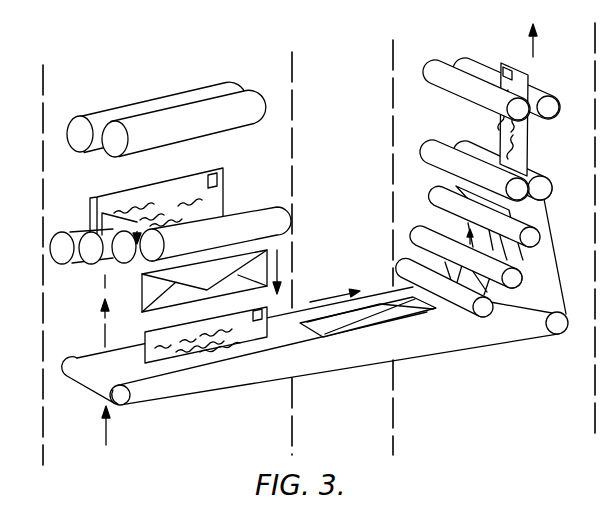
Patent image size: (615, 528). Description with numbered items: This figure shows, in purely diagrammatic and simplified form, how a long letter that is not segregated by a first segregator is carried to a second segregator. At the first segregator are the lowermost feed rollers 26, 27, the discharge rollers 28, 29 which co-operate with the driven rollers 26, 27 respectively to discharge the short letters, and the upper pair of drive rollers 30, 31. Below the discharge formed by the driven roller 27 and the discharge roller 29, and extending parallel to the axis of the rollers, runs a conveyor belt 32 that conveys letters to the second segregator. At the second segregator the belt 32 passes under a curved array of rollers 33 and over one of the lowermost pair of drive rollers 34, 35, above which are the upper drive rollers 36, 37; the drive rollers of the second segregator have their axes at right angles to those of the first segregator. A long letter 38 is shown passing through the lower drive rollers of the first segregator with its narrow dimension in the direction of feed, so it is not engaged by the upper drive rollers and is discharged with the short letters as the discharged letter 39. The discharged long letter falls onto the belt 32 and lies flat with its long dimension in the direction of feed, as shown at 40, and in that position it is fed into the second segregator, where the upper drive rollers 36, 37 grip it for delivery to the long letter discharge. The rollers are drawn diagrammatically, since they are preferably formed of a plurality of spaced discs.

The lowermost feed roller 26 is at (90, 262).
The lowermost feed roller 27 is at (128, 262).
The discharge roller 28 is at (55, 250).
The discharge roller 29 is at (284, 214).
The upper drive roller 30 is at (78, 119).
The upper drive roller 31 is at (246, 98).
The conveyor belt 32 is at (233, 355).
The curved array of rollers 33 is at (406, 266).
The lowermost drive roller 34 is at (545, 177).
The lowermost drive roller 35 is at (432, 148).
The upper drive roller 36 is at (546, 95).
The upper drive roller 37 is at (437, 62).
The long letter 38 is at (96, 200).
The discharged long letter 39 is at (146, 314).
The long letter on belt 40 is at (375, 320).